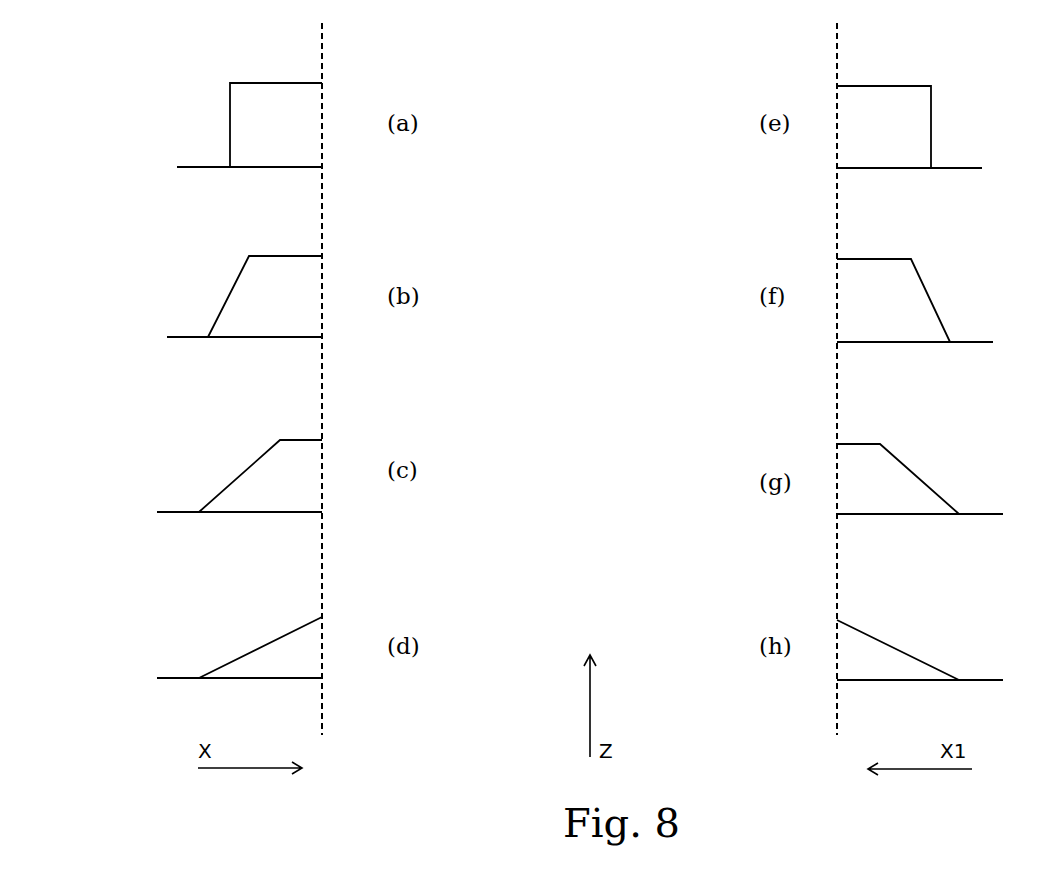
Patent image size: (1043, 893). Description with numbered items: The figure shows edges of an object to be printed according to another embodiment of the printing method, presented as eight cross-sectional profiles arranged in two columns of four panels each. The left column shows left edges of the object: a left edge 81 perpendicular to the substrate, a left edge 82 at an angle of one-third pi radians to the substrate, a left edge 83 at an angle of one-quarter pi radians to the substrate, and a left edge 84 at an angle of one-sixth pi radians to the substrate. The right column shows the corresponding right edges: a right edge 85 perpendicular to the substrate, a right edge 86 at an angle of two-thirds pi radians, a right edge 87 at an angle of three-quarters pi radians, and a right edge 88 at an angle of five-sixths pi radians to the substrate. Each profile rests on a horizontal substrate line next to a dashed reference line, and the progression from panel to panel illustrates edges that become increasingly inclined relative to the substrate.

The left edge 81 is at (230, 128).
The left edge 82 is at (230, 292).
The left edge 83 is at (248, 467).
The left edge 84 is at (262, 643).
The right edge 85 is at (931, 128).
The right edge 86 is at (932, 302).
The right edge 87 is at (908, 467).
The right edge 88 is at (890, 647).